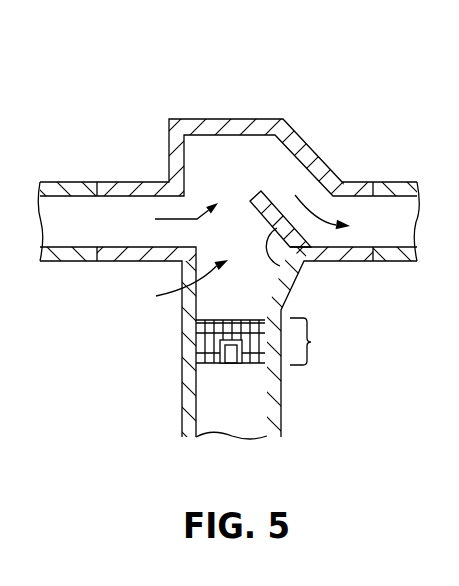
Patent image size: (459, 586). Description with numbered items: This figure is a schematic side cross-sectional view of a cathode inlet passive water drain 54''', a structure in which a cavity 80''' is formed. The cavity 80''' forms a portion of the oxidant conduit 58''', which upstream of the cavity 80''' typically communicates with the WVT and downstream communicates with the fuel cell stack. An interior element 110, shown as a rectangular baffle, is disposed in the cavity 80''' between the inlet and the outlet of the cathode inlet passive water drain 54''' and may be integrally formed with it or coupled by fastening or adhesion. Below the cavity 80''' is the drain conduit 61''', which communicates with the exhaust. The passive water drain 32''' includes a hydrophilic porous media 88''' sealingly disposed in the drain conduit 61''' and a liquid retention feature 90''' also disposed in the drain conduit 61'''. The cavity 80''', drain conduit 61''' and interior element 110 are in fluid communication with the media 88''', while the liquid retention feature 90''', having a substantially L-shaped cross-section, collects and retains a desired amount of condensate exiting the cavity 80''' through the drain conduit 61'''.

The cathode inlet passive water drain 54''' is at (229, 293).
The oxidant conduit 58''' is at (234, 259).
The cavity 80''' is at (173, 283).
The hydrophilic porous media 88''' is at (191, 341).
The liquid retention feature 90''' is at (180, 366).
The passive water drain 32''' is at (325, 341).
The drain conduit 61''' is at (279, 368).
The interior element 110 is at (280, 266).